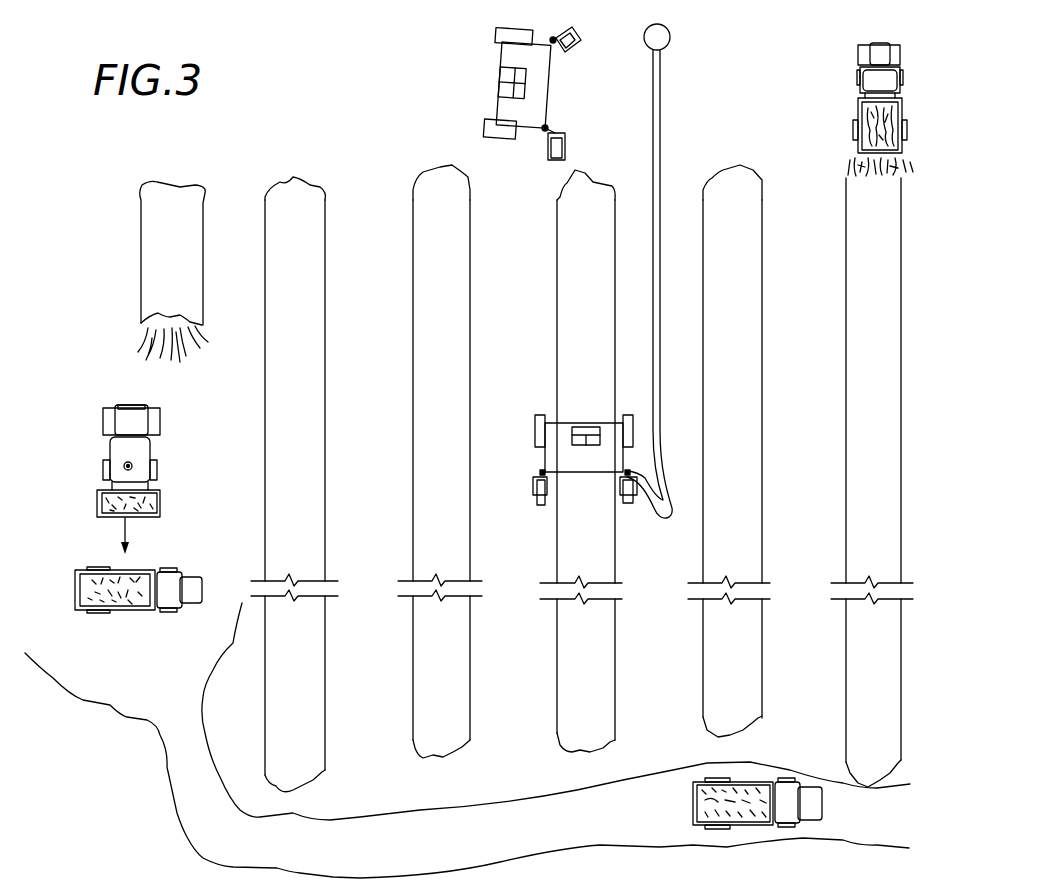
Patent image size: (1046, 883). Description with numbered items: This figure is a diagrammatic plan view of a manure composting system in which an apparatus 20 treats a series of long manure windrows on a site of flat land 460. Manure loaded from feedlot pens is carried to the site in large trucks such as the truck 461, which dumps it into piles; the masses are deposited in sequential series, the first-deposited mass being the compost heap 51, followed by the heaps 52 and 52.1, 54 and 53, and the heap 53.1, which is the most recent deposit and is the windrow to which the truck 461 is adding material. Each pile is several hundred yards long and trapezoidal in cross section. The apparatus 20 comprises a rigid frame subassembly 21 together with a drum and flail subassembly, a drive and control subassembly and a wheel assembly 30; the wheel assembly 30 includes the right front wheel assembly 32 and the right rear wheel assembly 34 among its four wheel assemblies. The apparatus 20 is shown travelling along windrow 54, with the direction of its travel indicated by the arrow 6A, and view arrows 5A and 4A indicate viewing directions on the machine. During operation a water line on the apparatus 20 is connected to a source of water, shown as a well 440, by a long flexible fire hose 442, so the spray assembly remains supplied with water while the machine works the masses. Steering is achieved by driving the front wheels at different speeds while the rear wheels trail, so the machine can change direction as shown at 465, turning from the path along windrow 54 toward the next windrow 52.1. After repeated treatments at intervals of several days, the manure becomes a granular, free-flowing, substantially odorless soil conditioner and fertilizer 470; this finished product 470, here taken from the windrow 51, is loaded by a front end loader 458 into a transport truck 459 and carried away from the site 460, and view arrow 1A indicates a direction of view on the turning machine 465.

The compost heap 51 is at (158, 183).
The compost heap 52 is at (288, 183).
The compost heap 52.1 is at (471, 182).
The compost heap 54 is at (590, 178).
The compost heap 53 is at (703, 190).
The compost heap 53.1 is at (850, 195).
The site of flat land 460 is at (533, 331).
The direction arrow 6A is at (585, 228).
The change of direction 465 is at (502, 70).
The view arrow 1A is at (496, 83).
The well 440 is at (669, 45).
The long flexible fire hose 442 is at (661, 128).
The truck 461 is at (854, 77).
The apparatus 20 is at (560, 475).
The rigid frame subassembly 21 is at (568, 424).
The right front wheel assembly 32 is at (540, 452).
The right rear wheel assembly 34 is at (540, 505).
The wheel assembly 30 is at (477, 498).
The view arrow 5A is at (524, 443).
The view arrow 4A is at (620, 528).
The front end loader 458 is at (152, 487).
The transport truck 459 is at (168, 620).
The soil conditioner and fertilizer 470 is at (115, 604).